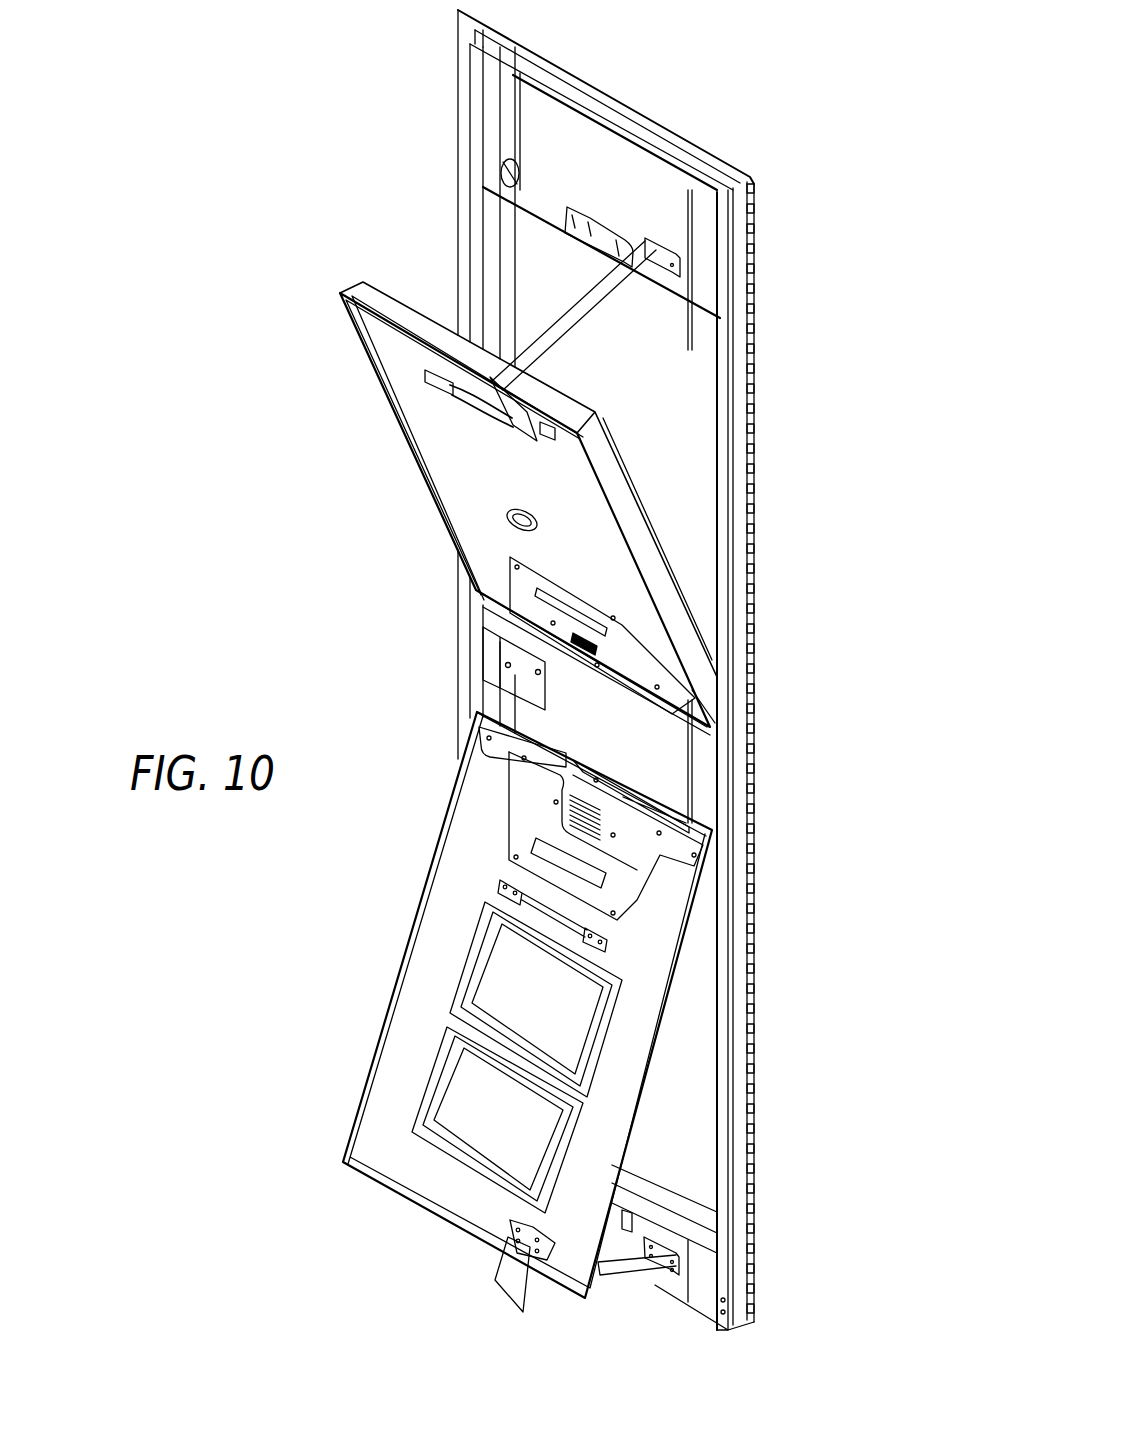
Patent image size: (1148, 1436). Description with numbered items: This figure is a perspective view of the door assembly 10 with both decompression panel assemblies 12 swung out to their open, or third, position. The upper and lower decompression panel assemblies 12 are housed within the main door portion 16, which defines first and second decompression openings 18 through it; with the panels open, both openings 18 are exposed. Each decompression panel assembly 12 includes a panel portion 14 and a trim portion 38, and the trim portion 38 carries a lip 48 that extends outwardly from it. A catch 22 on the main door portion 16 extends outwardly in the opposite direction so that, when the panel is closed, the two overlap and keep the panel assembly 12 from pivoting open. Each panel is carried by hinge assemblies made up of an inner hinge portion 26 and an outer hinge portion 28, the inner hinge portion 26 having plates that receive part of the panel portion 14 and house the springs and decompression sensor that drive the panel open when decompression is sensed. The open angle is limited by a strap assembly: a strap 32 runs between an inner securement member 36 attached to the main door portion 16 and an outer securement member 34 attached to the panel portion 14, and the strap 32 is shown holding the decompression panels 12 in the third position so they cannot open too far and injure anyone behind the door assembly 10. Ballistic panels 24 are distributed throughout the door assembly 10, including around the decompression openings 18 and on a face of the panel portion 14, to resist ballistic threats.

The door assembly 10 is at (798, 88).
The decompression panel assembly 12 is at (518, 785).
The panel portion 14 is at (438, 440).
The main door portion 16 is at (628, 150).
The decompression opening 18 is at (690, 506).
The catch 22 is at (612, 225).
The ballistic panel 24 is at (508, 232).
The inner hinge portion 26 is at (540, 620).
The outer hinge portion 28 is at (513, 580).
The strap 32 is at (598, 317).
The outer securement member 34 is at (508, 1285).
The inner securement member 36 is at (668, 272).
The trim portion 38 is at (652, 567).
The lip 48 is at (378, 307).